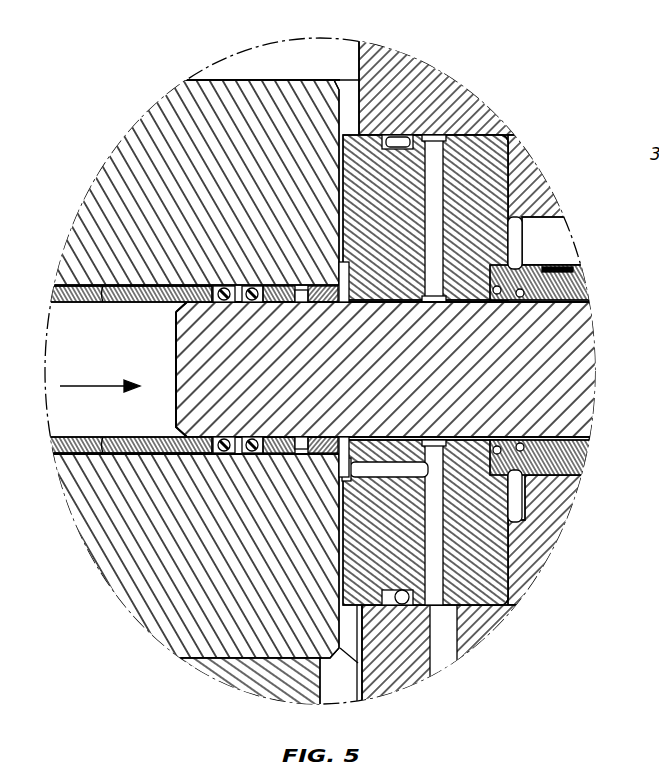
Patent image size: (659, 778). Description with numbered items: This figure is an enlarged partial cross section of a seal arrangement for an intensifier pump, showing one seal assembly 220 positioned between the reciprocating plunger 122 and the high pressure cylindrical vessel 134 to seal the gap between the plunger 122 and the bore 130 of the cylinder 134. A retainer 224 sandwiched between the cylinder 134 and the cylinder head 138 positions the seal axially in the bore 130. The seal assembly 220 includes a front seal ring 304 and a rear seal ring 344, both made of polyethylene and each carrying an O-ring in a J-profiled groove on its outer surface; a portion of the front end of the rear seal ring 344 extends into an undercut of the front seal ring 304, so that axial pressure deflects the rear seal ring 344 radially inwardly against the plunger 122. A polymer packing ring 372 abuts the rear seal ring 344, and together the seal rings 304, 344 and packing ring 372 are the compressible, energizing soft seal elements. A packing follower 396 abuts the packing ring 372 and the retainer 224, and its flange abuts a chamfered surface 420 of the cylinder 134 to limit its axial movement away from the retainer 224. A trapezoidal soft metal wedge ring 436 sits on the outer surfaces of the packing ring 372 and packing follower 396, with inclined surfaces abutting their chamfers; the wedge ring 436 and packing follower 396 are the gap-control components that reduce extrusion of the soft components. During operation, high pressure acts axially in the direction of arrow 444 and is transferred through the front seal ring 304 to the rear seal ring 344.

The plunger 122 is at (543, 353).
The bore 130 is at (85, 303).
The high pressure cylindrical vessel 134 is at (210, 200).
The cylinder head 138 is at (458, 108).
The retainer 224 is at (477, 190).
The seal assembly 220 is at (234, 324).
The front seal ring 304 is at (232, 306).
The rear seal ring 344 is at (257, 303).
The packing ring 372 is at (287, 301).
The packing follower 396 is at (322, 303).
The chamfered surface 420 is at (347, 437).
The wedge ring 436 is at (297, 286).
The arrow 444 is at (88, 388).